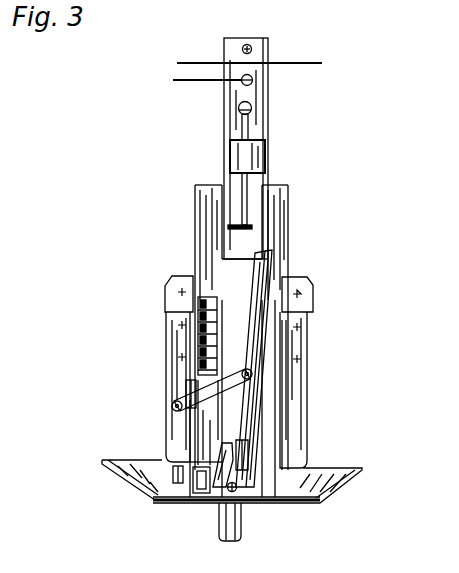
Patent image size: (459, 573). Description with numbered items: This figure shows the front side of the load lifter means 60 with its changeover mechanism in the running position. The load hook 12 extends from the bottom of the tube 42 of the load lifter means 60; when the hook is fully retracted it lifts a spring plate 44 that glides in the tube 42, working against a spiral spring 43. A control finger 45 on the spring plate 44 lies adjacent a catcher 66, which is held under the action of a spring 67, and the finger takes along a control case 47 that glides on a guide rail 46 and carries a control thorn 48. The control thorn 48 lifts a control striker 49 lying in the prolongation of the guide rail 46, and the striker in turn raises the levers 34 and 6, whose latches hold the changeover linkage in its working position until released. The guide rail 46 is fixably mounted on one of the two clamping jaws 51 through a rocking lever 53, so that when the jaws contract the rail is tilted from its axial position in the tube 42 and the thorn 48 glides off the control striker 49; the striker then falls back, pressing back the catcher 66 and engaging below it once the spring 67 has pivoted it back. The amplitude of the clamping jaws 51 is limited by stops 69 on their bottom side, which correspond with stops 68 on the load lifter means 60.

The lever 6 is at (310, 63).
The lever 34 is at (185, 82).
The control striker 49 is at (242, 190).
The tube 42 is at (288, 203).
The clamping jaws 51 is at (173, 418).
The spiral spring 43 is at (190, 336).
The guide rail 46 is at (258, 276).
The control thorn 48 is at (255, 410).
The spring plate 44 is at (172, 403).
The rocking lever 53 is at (192, 387).
The stops 68 is at (167, 478).
The control finger 45 is at (135, 467).
The load lifter means 60 is at (330, 482).
The stops 69 is at (175, 474).
The catcher 66 is at (187, 480).
The spring 67 is at (218, 485).
The control case 47 is at (240, 462).
The load hook 12 is at (237, 522).